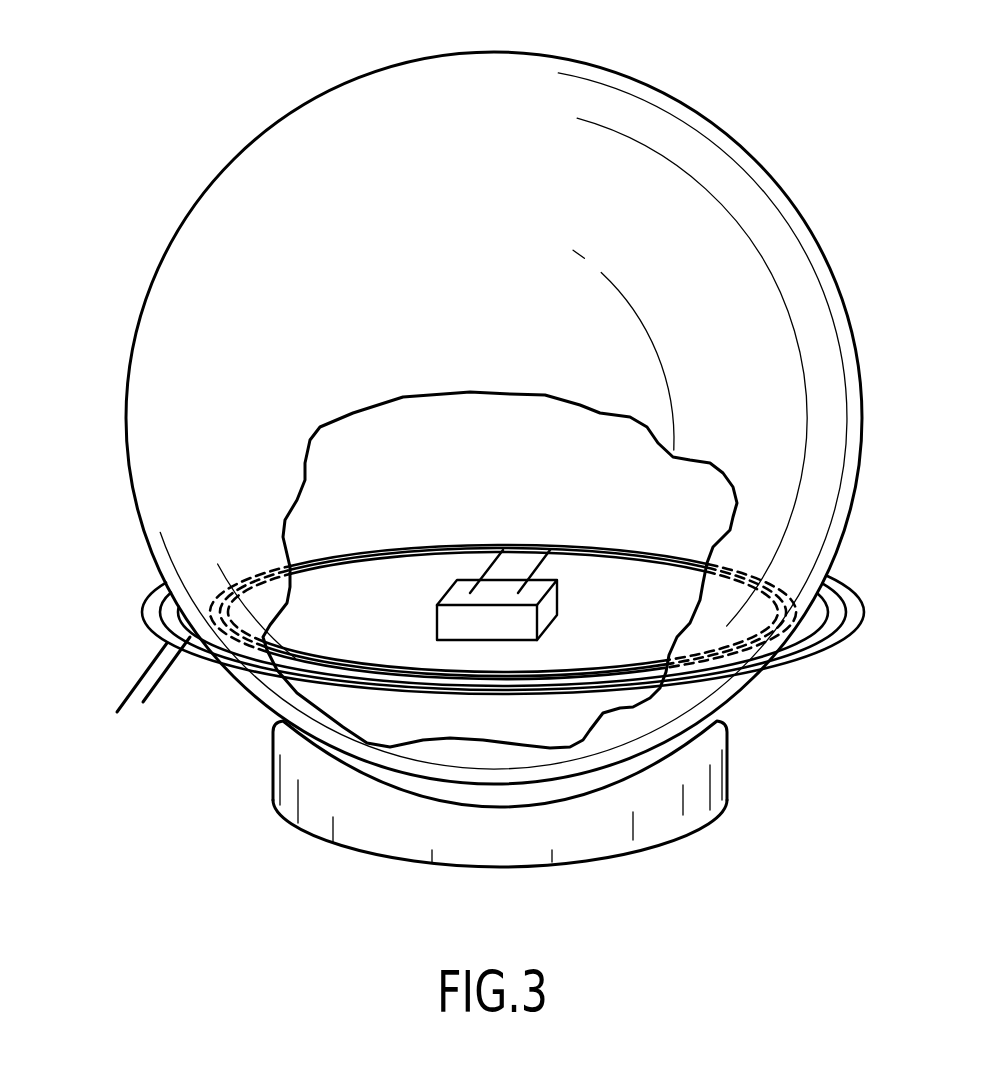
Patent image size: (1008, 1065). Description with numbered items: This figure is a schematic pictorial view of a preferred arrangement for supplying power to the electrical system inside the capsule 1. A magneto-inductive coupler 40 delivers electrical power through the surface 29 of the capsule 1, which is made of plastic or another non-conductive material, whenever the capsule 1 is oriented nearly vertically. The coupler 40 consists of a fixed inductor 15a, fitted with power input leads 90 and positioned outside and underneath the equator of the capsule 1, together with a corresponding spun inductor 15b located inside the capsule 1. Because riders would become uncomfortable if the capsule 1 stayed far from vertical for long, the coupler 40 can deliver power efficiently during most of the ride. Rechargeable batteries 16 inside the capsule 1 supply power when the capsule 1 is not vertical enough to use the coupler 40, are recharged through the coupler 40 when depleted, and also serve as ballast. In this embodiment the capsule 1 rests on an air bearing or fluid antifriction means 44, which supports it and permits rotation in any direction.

The capsule 1 is at (480, 448).
The surface 29 is at (817, 243).
The fixed inductor 15a is at (141, 627).
The spun inductor 15b is at (676, 550).
The rechargeable batteries 16 is at (547, 612).
The magneto-inductive coupler 40 is at (480, 590).
The air bearing or fluid antifriction means 44 is at (507, 848).
The power input leads 90 is at (157, 706).